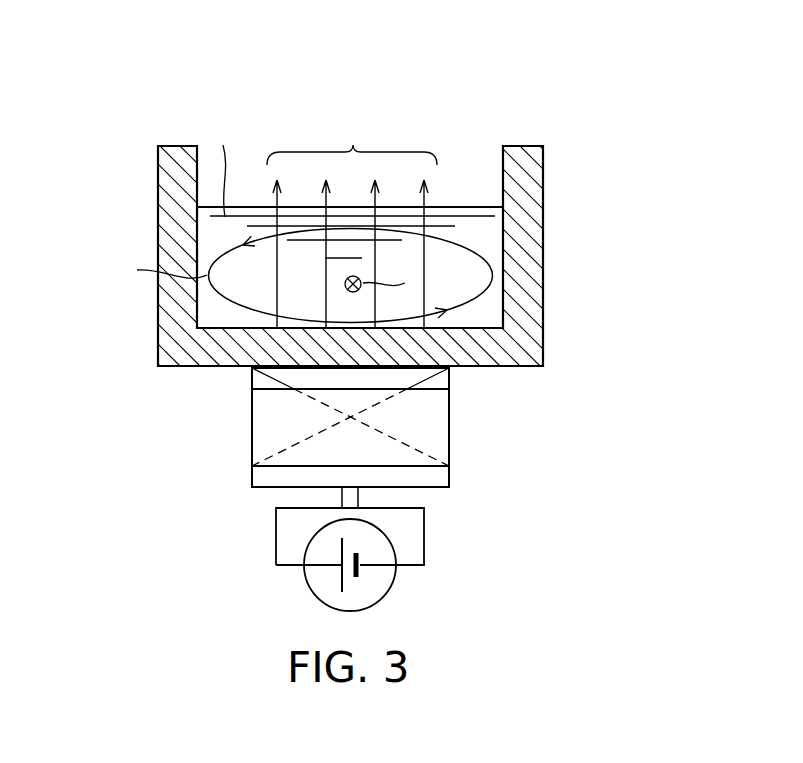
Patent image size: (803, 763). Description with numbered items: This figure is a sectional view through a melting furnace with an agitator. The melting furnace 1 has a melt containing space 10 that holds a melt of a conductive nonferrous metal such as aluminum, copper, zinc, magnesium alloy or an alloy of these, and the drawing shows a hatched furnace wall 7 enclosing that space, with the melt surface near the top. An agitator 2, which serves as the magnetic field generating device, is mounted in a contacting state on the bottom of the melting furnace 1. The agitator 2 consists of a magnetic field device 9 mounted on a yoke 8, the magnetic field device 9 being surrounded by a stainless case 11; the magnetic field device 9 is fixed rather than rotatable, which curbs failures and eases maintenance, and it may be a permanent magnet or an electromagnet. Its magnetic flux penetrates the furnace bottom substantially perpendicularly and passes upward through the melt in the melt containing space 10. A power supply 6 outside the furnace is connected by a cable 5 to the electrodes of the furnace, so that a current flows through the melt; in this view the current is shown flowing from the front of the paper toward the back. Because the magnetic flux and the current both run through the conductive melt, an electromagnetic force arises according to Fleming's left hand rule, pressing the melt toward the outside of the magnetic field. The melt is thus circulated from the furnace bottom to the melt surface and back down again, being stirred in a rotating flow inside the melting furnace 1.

The melting furnace 1 is at (516, 98).
The agitator 2 is at (518, 415).
The cable 5 is at (276, 537).
The power supply 6 is at (390, 593).
The crucible 7 is at (525, 275).
The yoke 8 is at (440, 475).
The magnetic field device 9 is at (433, 380).
The melt containing space 10 is at (503, 230).
The stainless case 11 is at (430, 437).